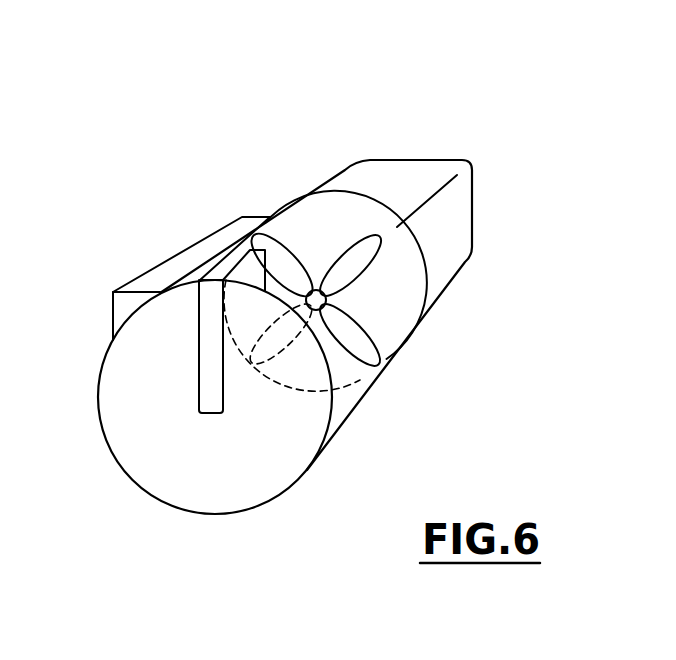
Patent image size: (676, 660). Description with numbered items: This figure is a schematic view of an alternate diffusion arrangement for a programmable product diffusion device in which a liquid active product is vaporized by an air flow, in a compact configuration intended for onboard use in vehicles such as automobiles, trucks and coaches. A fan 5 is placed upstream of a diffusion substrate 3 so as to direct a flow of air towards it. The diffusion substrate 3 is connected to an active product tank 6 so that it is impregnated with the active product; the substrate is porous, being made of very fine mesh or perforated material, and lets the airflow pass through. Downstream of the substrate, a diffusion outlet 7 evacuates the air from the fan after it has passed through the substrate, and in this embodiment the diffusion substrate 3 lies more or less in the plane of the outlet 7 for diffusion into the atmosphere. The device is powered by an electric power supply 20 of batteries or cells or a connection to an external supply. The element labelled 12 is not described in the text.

The diffusion substrate 3 is at (212, 375).
The fan 5 is at (306, 238).
The active product tank 6 is at (217, 268).
The diffusion outlet 7 is at (176, 455).
The bar 12 is at (168, 273).
The electric power supply 20 is at (384, 176).